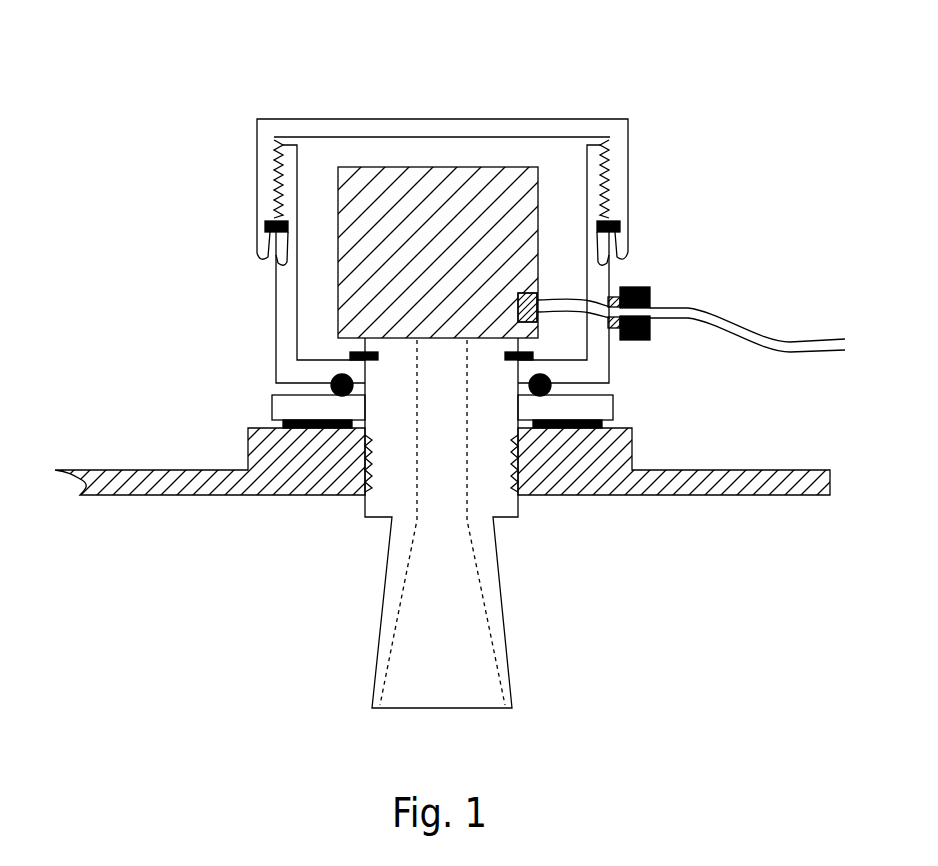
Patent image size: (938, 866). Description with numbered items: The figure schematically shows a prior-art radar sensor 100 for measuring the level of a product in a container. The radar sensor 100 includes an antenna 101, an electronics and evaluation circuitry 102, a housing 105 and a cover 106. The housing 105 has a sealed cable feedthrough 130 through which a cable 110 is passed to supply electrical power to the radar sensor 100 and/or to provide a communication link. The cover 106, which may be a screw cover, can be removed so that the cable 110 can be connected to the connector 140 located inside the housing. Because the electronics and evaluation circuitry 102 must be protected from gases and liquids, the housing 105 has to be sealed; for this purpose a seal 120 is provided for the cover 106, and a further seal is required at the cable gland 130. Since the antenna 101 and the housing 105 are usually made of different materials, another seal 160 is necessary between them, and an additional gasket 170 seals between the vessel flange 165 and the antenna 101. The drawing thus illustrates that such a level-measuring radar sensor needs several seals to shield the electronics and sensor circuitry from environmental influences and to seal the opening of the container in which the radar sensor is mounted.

The radar sensor 100 is at (192, 103).
The antenna 101 is at (408, 613).
The electronics and evaluation circuitry 102 is at (398, 213).
The housing 105 is at (287, 290).
The cover 106 is at (585, 119).
The cable 110 is at (713, 320).
The seal 120 is at (267, 268).
The sealed cable feedthrough 130 is at (642, 340).
The connector 140 is at (536, 292).
The seal 160 is at (330, 385).
The vessel flange 165 is at (147, 485).
The gasket 170 is at (312, 419).